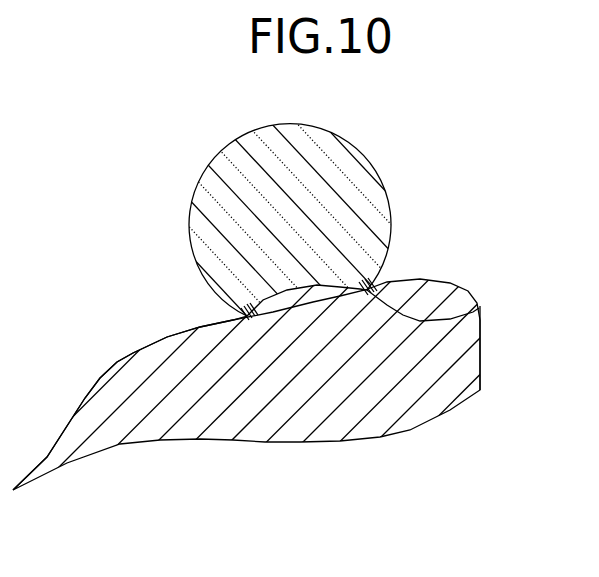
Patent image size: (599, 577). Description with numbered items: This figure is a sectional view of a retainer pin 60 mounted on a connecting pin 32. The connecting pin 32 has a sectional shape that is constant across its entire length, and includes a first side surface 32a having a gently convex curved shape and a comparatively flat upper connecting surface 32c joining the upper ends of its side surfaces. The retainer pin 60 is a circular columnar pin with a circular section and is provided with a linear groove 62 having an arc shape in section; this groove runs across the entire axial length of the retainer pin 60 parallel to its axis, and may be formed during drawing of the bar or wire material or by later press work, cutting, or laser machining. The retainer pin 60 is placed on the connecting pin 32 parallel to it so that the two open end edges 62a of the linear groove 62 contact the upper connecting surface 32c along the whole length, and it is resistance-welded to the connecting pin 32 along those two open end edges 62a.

The retainer pin 60 is at (305, 152).
The linear groove 62 is at (480, 319).
The open end edges 62a is at (234, 302).
The connecting pin 32 is at (72, 353).
The upper connecting surface 32c is at (168, 335).
The first side surface 32a is at (482, 363).